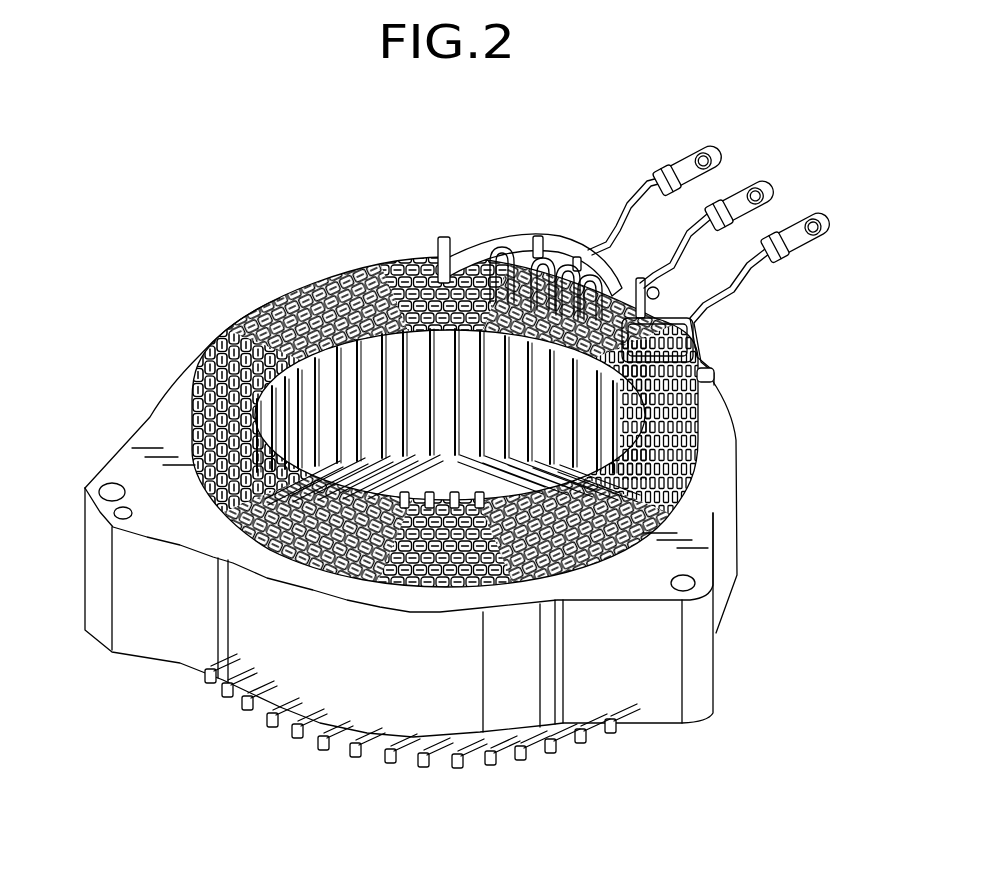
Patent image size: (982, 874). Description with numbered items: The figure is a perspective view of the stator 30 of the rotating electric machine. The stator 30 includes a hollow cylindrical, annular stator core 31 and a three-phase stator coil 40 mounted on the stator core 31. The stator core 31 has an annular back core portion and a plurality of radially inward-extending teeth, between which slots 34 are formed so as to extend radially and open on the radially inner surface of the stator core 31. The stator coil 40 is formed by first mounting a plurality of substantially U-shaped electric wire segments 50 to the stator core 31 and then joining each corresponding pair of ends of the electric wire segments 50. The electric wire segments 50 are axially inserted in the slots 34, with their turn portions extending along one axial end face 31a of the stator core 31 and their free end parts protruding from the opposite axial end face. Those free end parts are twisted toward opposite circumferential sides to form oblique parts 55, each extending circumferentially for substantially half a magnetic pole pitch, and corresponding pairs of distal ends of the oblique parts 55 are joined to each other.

The stator 30 is at (247, 203).
The stator core 31 is at (662, 725).
The axial end face 31a is at (180, 398).
The slot 34 is at (315, 413).
The stator coil 40 is at (700, 424).
The electric wire segment 50 is at (297, 547).
The oblique part 55 is at (447, 745).